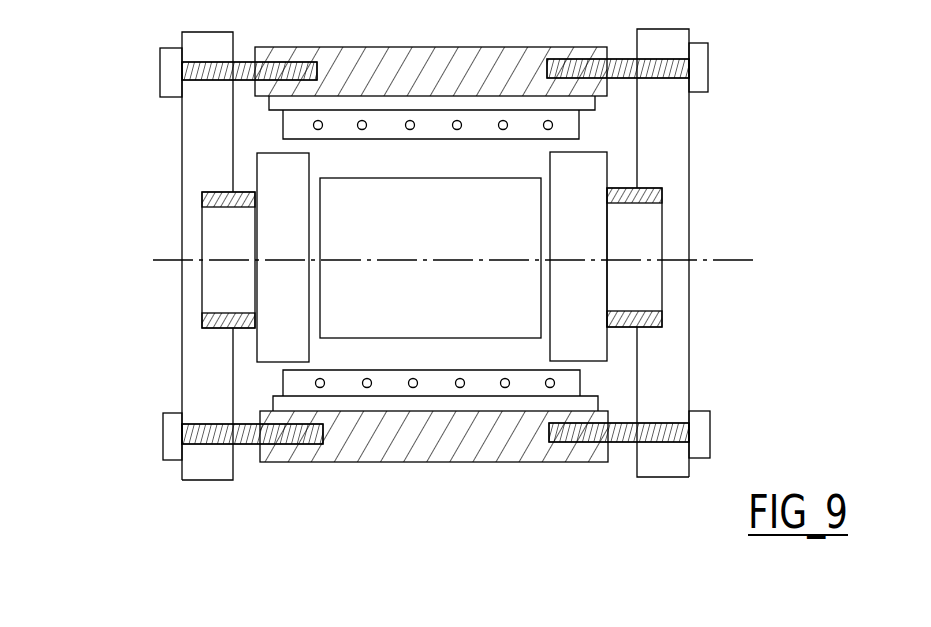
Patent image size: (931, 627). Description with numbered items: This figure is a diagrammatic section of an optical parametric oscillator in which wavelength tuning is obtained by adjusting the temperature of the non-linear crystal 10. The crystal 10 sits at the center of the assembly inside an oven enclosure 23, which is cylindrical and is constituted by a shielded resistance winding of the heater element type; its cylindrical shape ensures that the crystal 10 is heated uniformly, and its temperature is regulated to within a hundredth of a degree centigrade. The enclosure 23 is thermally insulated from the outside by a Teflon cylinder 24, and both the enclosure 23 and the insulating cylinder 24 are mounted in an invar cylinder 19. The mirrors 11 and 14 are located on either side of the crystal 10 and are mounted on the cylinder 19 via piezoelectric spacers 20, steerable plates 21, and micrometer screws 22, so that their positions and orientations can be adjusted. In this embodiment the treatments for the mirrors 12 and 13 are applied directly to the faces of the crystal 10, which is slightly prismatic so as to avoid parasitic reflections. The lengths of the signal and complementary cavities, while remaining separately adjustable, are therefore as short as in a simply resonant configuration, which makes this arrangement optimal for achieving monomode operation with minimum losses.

The crystal 10 is at (493, 315).
The mirror 11 is at (265, 227).
The mirror 12 is at (320, 193).
The mirror 13 is at (548, 193).
The mirror 14 is at (583, 290).
The invar cylinder 19 is at (398, 67).
The piezoelectric spacers 20 is at (660, 197).
The steerable plates 21 is at (190, 185).
The micrometer screws 22 is at (250, 445).
The oven enclosure 23 is at (310, 122).
The Teflon cylinder 24 is at (418, 402).